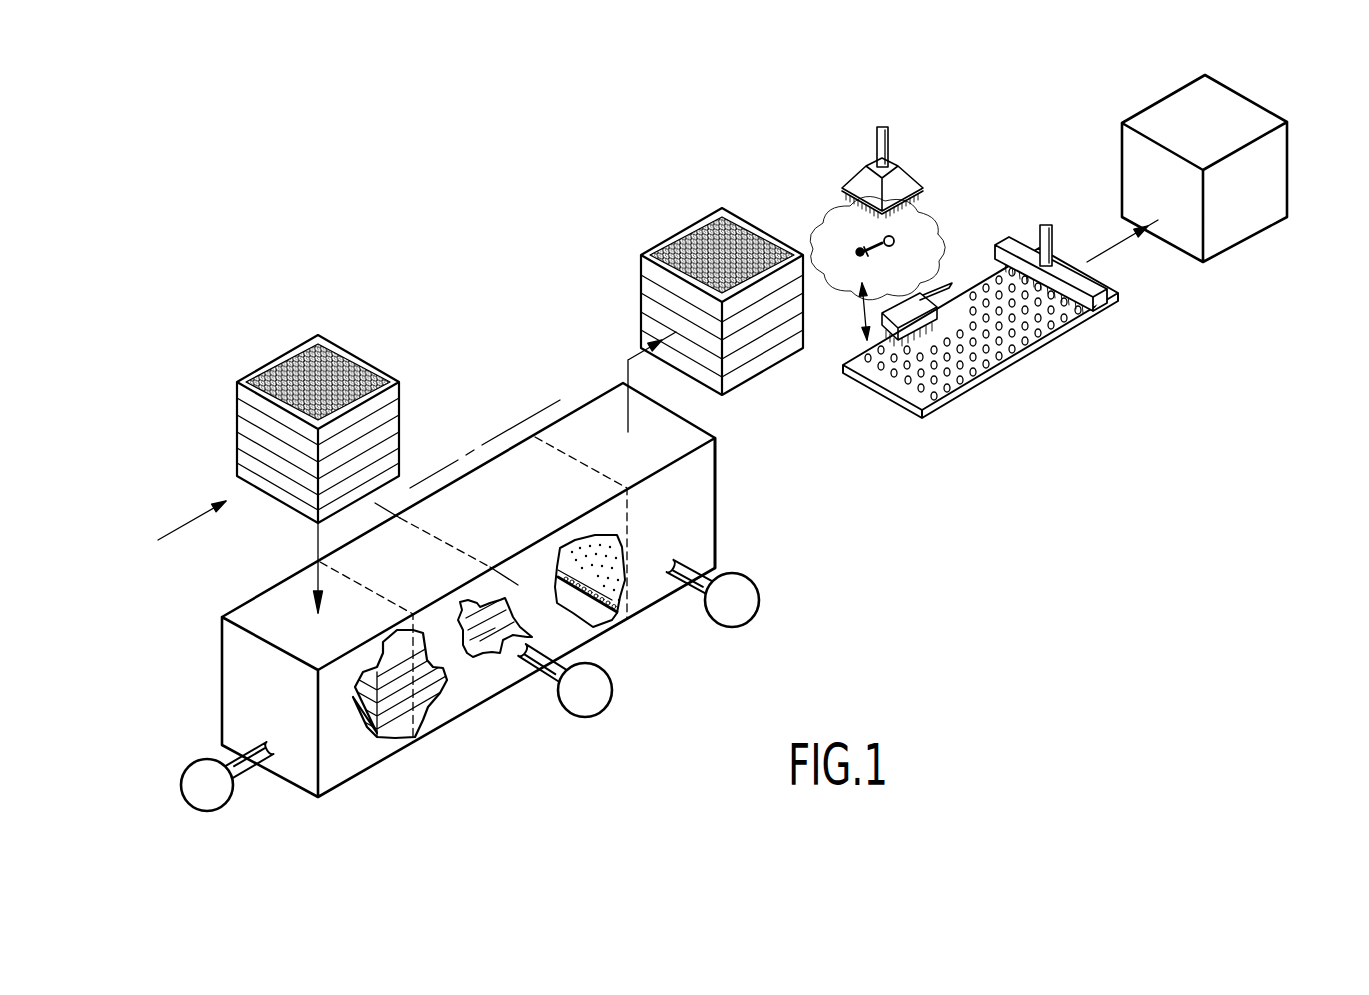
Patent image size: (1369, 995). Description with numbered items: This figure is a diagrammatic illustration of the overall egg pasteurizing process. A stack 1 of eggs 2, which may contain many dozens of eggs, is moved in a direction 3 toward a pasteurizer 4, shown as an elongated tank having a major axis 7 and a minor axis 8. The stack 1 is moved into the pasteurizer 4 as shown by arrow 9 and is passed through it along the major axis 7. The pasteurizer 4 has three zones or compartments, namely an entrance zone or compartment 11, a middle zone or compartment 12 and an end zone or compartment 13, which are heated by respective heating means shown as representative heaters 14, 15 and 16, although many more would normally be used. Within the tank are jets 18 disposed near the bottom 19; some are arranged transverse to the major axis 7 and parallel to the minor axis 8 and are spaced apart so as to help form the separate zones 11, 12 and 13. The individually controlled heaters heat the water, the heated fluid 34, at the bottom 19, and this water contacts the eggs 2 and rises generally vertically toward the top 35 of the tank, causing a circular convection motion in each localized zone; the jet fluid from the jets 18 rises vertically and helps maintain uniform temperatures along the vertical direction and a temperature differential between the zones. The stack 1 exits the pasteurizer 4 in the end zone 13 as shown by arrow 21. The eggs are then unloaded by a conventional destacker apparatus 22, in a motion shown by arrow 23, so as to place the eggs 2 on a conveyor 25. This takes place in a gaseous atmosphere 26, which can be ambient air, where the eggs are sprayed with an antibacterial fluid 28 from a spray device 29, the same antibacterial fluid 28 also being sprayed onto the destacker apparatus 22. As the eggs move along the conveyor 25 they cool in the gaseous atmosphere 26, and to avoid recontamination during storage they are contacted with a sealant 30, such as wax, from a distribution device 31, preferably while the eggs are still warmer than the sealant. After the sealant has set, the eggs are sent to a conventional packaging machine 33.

The stack 1 is at (236, 418).
The eggs 2 is at (286, 368).
The direction 3 is at (177, 530).
The pasteurizer 4 is at (285, 797).
The major axis 7 is at (473, 446).
The minor axis 8 is at (455, 547).
The arrow 9 is at (322, 551).
The entrance zone or compartment 11 is at (325, 768).
The middle zone or compartment 12 is at (575, 633).
The end zone or compartment 13 is at (700, 548).
The heater 14 is at (203, 777).
The heater 15 is at (605, 693).
The heater 16 is at (727, 618).
The jets 18 is at (560, 584).
The bottom 19 is at (622, 632).
The arrow 21 is at (628, 372).
The destacker apparatus 22 is at (857, 253).
The arrow 23 is at (858, 313).
The conveyor 25 is at (942, 402).
The gaseous atmosphere 26 is at (930, 237).
The antibacterial fluid 28 is at (903, 205).
The spray device 29 is at (912, 172).
The sealant 30 is at (1000, 267).
The distribution device 31 is at (1068, 262).
The packaging machine 33 is at (1250, 205).
The heated fluid 34 is at (478, 640).
The top 35 is at (505, 446).